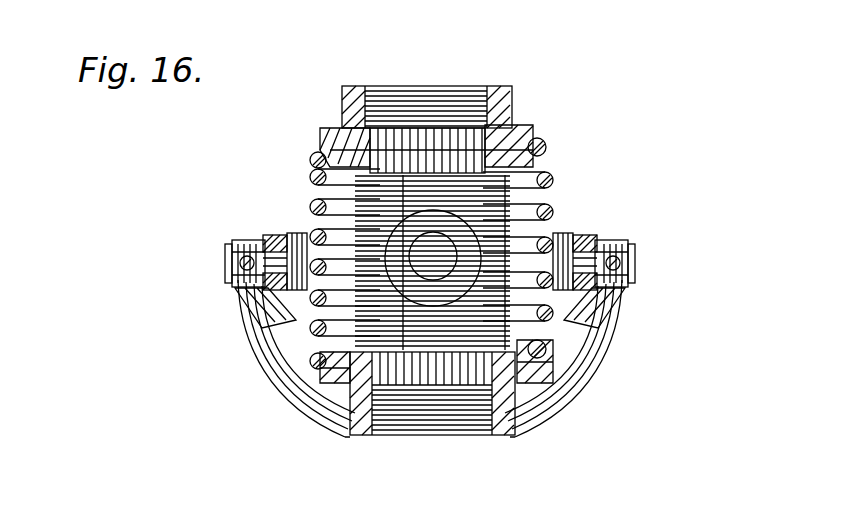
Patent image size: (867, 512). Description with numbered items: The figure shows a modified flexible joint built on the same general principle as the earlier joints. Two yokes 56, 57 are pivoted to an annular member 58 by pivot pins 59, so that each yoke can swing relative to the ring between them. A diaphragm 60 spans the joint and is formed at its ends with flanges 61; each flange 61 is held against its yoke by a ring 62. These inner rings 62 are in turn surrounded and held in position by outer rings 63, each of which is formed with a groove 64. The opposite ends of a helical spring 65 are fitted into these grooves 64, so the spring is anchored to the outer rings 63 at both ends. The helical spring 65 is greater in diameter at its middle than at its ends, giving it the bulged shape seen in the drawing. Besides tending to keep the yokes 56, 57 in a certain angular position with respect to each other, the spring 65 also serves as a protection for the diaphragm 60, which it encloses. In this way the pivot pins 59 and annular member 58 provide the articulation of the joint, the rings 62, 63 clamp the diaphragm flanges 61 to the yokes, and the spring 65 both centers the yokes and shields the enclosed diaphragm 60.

The yoke 56 is at (413, 140).
The yoke 57 is at (315, 413).
The annular member 58 is at (277, 240).
The pivot pin 59 is at (238, 282).
The diaphragm 60 is at (414, 335).
The flange 61 is at (498, 146).
The ring 62 is at (505, 152).
The ring 63 is at (530, 148).
The groove 64 is at (322, 160).
The helical spring 65 is at (553, 210).